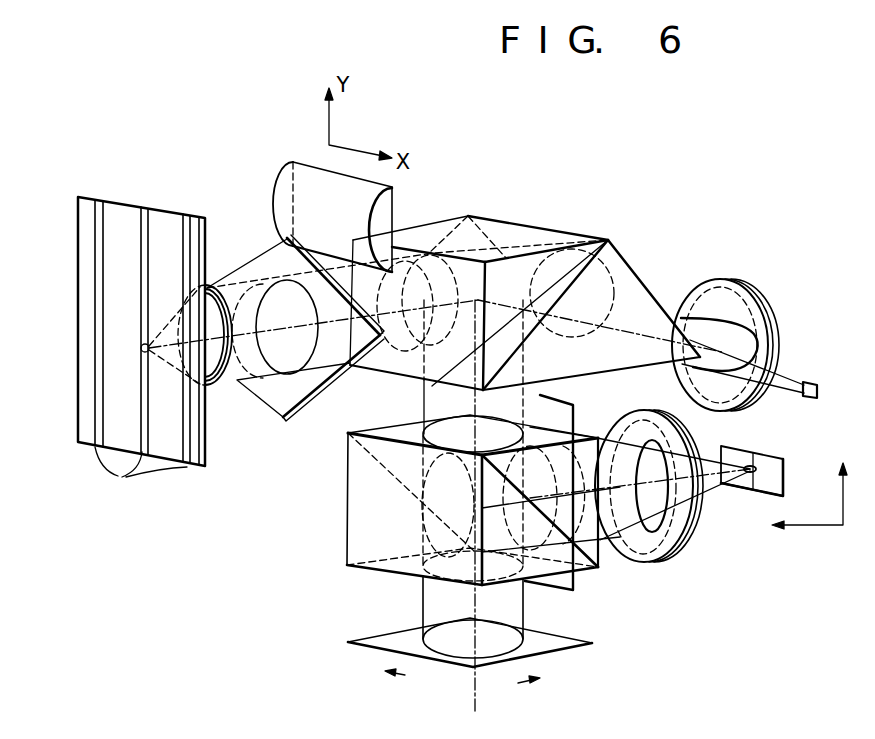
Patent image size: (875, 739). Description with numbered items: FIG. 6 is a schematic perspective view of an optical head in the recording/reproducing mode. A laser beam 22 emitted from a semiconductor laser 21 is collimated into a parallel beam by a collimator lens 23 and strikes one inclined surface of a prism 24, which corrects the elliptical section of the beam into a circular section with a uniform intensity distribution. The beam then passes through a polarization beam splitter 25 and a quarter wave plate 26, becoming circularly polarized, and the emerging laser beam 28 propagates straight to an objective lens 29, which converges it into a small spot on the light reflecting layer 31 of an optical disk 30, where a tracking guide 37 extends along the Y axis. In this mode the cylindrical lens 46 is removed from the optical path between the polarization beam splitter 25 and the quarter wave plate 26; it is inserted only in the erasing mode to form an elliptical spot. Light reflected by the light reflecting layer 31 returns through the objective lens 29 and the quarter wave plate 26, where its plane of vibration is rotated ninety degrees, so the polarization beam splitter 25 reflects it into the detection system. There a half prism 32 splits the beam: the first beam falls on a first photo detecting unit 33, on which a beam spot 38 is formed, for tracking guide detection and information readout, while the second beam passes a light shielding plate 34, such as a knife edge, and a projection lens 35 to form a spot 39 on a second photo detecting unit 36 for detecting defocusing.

The semiconductor laser 21 is at (817, 384).
The laser beam 22 is at (790, 370).
The collimator lens 23 is at (747, 286).
The prism 24 is at (621, 256).
The polarization beam splitter 25 is at (430, 222).
The quarter wave plate 26 is at (289, 410).
The laser beam 28 is at (363, 278).
The objective lens 29 is at (213, 372).
The optical disk 30 is at (95, 199).
The light reflecting layer 31 is at (132, 214).
The half prism 32 is at (347, 541).
The first photo detecting unit 33 is at (365, 645).
The light shielding plate 34 is at (560, 593).
The projection lens 35 is at (662, 561).
The second photo detecting unit 36 is at (773, 458).
The tracking guide 37 is at (141, 474).
The aperture 38 is at (430, 640).
The spot 39 is at (760, 471).
The cylindrical lens 46 is at (283, 178).